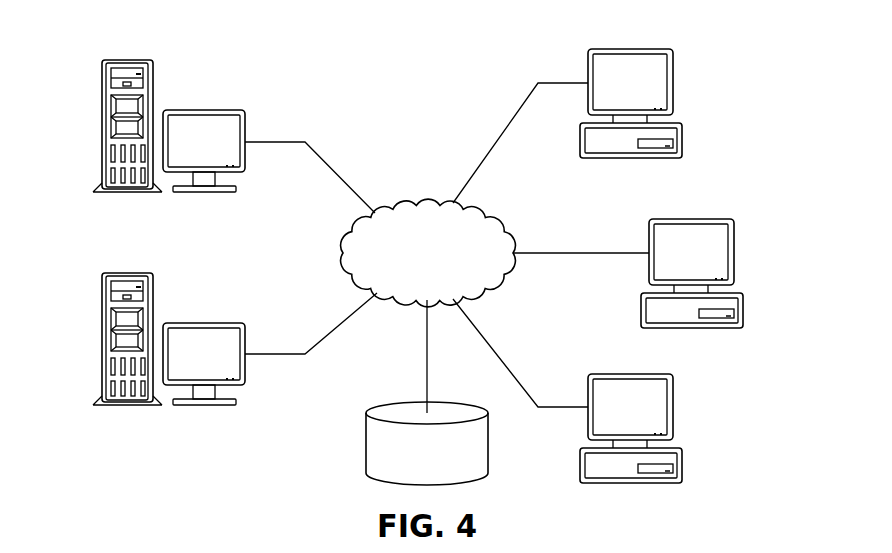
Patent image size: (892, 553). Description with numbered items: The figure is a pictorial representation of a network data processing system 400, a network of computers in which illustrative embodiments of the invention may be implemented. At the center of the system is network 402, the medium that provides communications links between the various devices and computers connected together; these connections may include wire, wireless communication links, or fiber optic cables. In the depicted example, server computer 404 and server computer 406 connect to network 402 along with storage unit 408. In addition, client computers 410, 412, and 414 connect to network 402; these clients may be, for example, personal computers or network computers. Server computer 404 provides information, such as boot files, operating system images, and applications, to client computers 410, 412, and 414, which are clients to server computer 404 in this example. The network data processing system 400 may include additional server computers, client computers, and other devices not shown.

The network data processing system 400 is at (308, 59).
The network 402 is at (420, 199).
The server computer 404 is at (102, 128).
The server computer 406 is at (102, 338).
The storage unit 408 is at (365, 445).
The client computer 410 is at (683, 142).
The client computer 412 is at (744, 315).
The client computer 414 is at (682, 468).